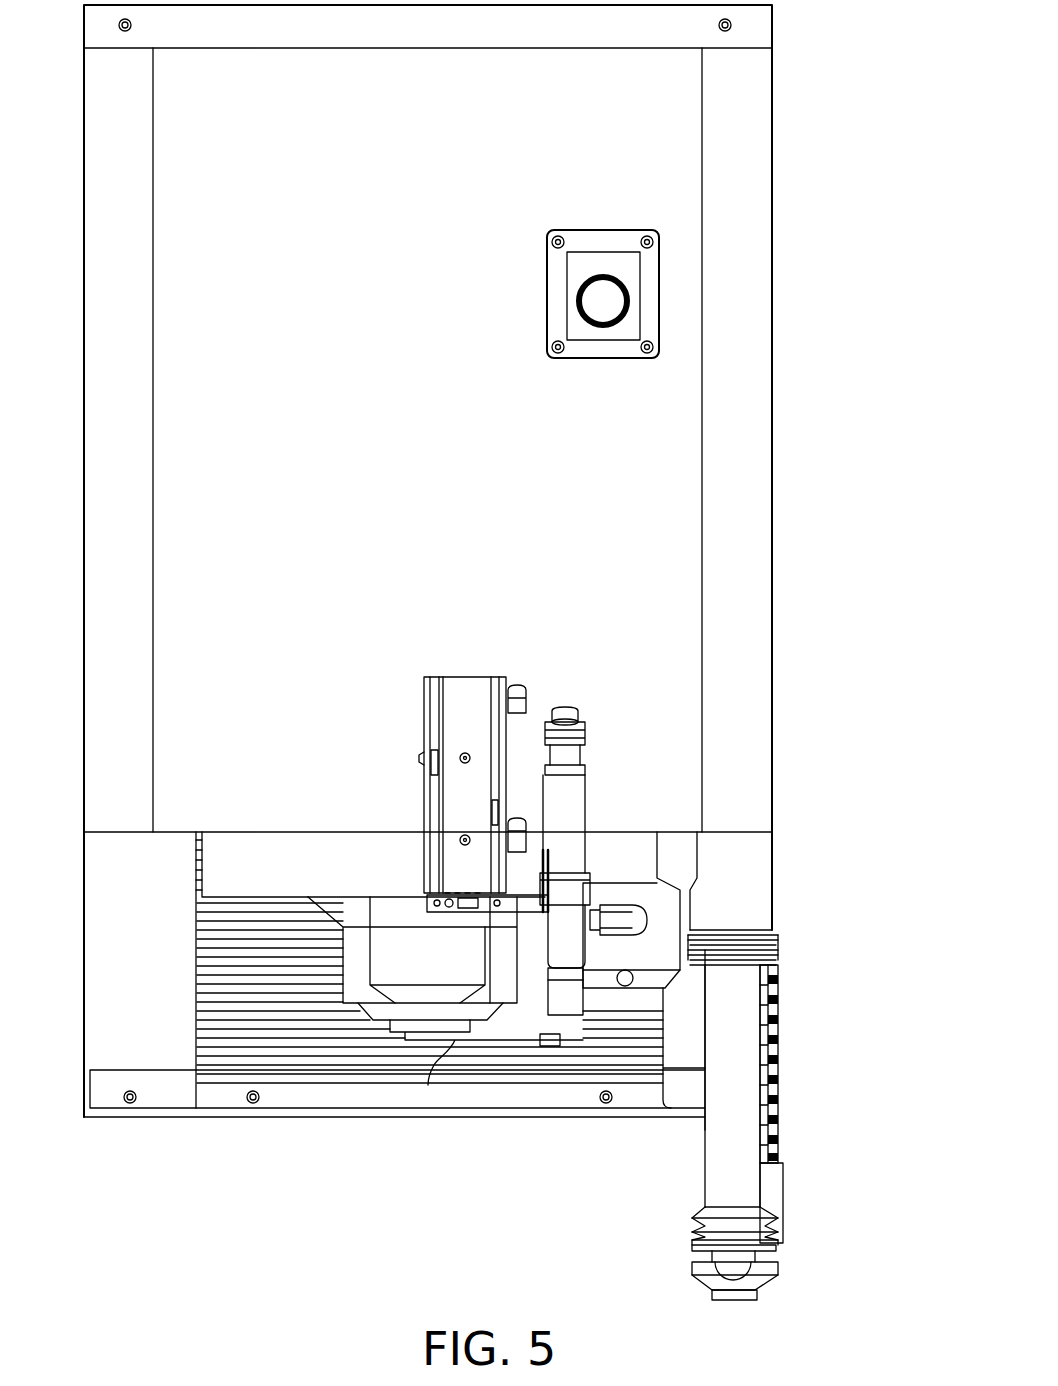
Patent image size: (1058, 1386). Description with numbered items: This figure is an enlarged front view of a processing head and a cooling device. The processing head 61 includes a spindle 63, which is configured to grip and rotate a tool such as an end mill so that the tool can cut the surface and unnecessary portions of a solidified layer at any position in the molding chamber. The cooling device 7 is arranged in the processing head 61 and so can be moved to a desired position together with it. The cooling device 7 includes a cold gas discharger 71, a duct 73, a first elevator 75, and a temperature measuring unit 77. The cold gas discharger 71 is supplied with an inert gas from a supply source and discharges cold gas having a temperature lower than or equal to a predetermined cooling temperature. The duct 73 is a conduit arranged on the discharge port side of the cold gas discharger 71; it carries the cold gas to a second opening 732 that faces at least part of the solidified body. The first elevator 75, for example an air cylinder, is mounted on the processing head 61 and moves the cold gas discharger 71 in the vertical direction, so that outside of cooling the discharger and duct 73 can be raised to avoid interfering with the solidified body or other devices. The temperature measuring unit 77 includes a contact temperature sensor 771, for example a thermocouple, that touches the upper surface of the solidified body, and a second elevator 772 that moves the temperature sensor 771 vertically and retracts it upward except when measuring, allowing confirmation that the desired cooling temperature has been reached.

The processing head 61 is at (750, 162).
The spindle 63 is at (400, 1030).
The cooling device 7 is at (641, 846).
The cold gas discharger 71 is at (568, 798).
The duct 73 is at (572, 1010).
The second opening 732 is at (558, 1018).
The first elevator 75 is at (475, 688).
The temperature measuring unit 77 is at (725, 1084).
The temperature sensor 771 is at (750, 1297).
The second elevator 772 is at (775, 1087).